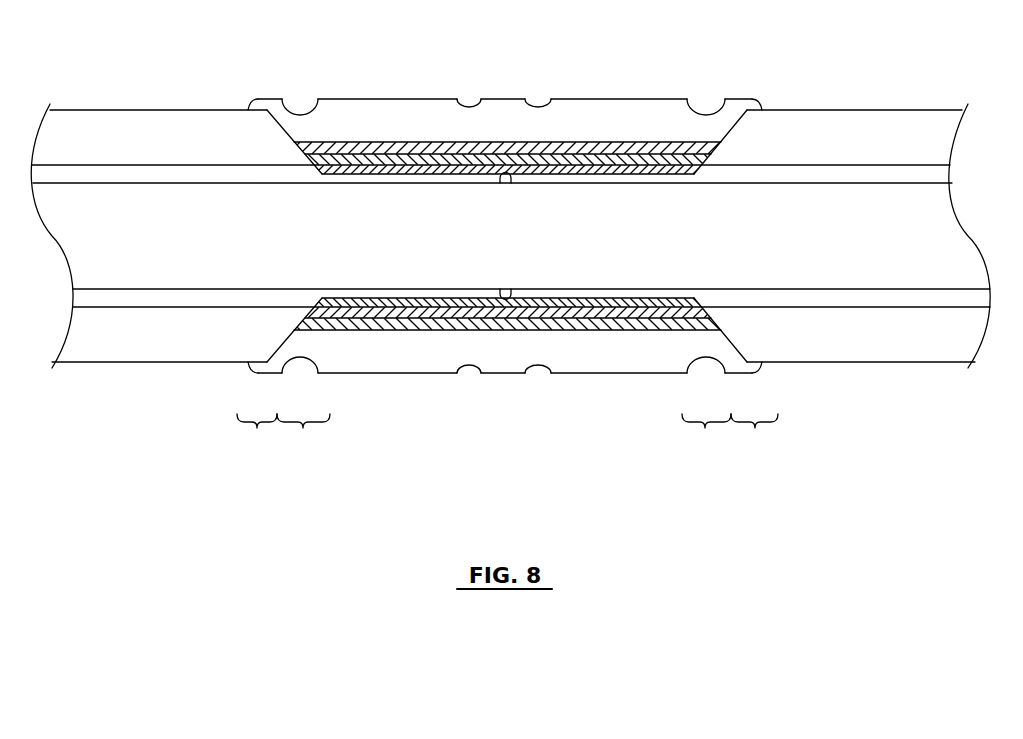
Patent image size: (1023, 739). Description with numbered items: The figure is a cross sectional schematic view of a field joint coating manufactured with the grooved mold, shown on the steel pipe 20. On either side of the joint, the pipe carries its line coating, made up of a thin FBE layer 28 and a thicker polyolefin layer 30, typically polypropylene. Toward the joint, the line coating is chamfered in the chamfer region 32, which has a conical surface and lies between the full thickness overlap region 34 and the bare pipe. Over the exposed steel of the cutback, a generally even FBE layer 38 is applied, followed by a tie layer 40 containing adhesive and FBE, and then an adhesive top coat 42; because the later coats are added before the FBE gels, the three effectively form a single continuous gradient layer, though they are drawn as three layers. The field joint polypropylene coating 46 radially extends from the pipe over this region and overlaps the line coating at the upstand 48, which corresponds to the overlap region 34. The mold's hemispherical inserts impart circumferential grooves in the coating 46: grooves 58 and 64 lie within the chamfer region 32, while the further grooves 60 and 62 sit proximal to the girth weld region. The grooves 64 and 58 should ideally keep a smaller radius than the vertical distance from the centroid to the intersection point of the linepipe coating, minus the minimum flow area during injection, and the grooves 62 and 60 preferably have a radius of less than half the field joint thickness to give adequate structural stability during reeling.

The steel pipe 20 is at (453, 178).
The FBE layer 28 is at (172, 168).
The polyolefin layer 30 is at (88, 110).
The chamfer region 32 is at (504, 437).
The overlap region 34 is at (507, 437).
The FBE layer 38 is at (336, 172).
The tie layer 40 is at (365, 155).
The adhesive top coat 42 is at (421, 148).
The field joint polypropylene coating 46 is at (612, 99).
The upstand 48 is at (256, 100).
The groove 58 is at (706, 108).
The groove 60 is at (537, 104).
The groove 62 is at (470, 104).
The groove 64 is at (299, 108).